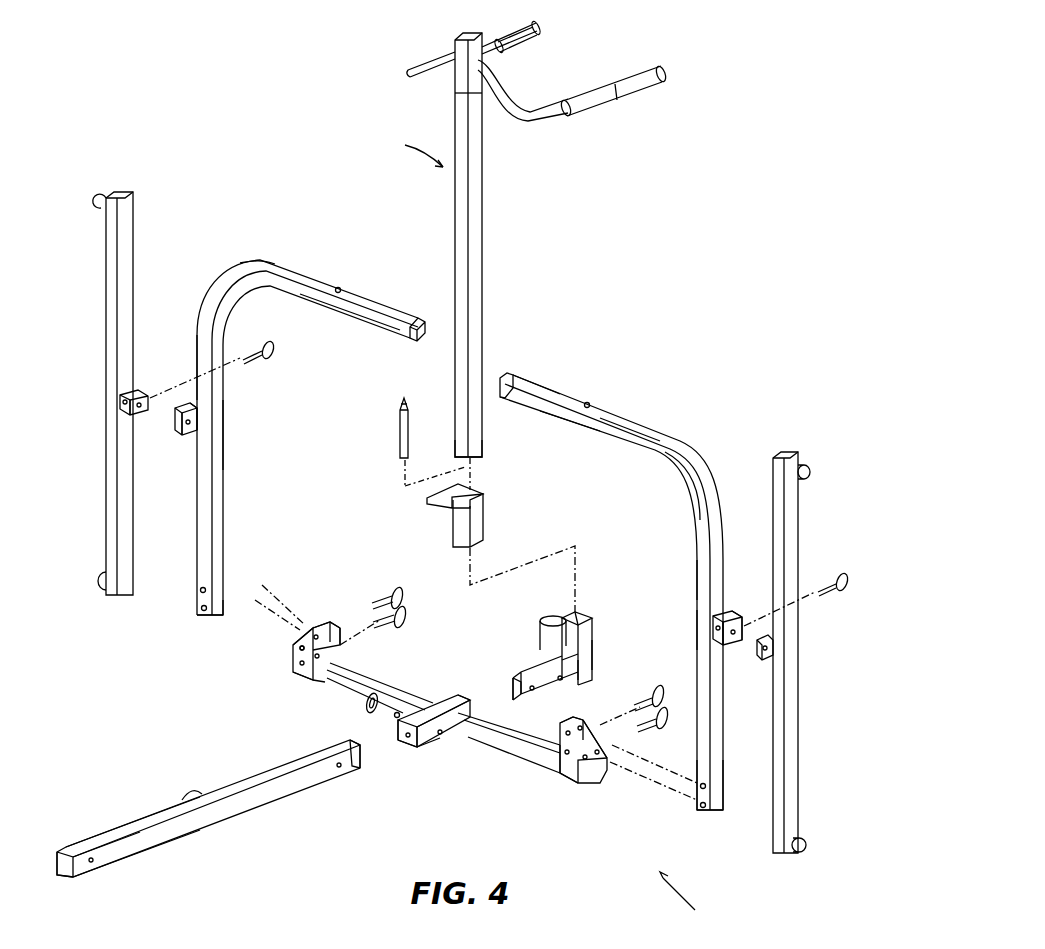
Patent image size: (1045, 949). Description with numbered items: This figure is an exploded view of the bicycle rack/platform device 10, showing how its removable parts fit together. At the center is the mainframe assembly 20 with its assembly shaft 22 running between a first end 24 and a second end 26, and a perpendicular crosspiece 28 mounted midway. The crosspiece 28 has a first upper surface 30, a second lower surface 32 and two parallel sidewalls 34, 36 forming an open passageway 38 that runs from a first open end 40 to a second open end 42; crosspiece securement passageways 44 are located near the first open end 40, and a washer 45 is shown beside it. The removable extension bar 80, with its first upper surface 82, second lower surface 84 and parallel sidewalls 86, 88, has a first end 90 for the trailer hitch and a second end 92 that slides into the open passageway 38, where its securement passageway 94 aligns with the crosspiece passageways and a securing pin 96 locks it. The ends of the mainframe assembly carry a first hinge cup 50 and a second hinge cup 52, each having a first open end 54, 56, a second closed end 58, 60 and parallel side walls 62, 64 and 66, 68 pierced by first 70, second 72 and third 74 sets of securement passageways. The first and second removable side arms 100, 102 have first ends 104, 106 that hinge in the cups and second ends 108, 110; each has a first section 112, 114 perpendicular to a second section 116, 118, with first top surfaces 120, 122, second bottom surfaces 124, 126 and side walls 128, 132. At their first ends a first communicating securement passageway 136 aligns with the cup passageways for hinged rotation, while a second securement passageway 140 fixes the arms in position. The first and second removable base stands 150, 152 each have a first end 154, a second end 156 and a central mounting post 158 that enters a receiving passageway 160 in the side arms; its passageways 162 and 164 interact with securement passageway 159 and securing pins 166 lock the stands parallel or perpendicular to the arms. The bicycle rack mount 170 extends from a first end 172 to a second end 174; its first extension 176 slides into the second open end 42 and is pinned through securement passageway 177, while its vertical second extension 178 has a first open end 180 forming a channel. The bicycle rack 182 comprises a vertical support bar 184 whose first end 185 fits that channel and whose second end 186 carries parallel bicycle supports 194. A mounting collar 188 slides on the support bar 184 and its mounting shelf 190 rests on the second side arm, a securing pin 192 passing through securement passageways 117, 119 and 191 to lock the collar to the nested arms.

The bicycle rack/platform device 10 is at (684, 900).
The mainframe assembly 20 is at (505, 748).
The assembly shaft 22 is at (395, 690).
The first end 24 is at (562, 766).
The second end 26 is at (325, 682).
The crosspiece 28 is at (427, 752).
The first upper surface 30 is at (450, 700).
The second lower surface 32 is at (432, 738).
The parallel sidewall 34 is at (394, 716).
The parallel sidewall 36 is at (440, 730).
The open passageway 38 is at (405, 745).
The first open end 40 is at (414, 750).
The second open end 42 is at (468, 700).
The crosspiece securement passageways 44 is at (439, 736).
The washer 45 is at (366, 706).
The first hinge cup 50 is at (597, 782).
The second hinge cup 52 is at (292, 665).
The first open end 54 is at (585, 720).
The first open end 56 is at (300, 632).
The second closed end 58 is at (572, 720).
The second closed end 60 is at (336, 624).
The parallel side wall 62 is at (600, 726).
The parallel side wall 64 is at (575, 786).
The parallel side wall 66 is at (300, 676).
The parallel side wall 68 is at (318, 625).
The first set of communicating securement passageways 70 is at (402, 597).
The second set of communicating securement passageways 72 is at (405, 618).
The third set of communicating securement passageways 74 is at (300, 642).
The removable extension bar 80 is at (235, 808).
The first upper surface 82 is at (130, 828).
The second lower surface 84 is at (115, 862).
The parallel sidewall 86 is at (175, 828).
The parallel sidewall 88 is at (158, 812).
The first end 90 is at (60, 878).
The second end 92 is at (360, 770).
The securement passageway 94 is at (337, 768).
The securing pin 96 is at (93, 862).
The first removable side arm 100 is at (692, 470).
The second removable side arm 102 is at (230, 262).
The first end 104 is at (718, 812).
The first end 106 is at (205, 613).
The second end 108 is at (503, 378).
The second end 110 is at (423, 322).
The first section 112 is at (698, 632).
The first section 114 is at (225, 435).
The second section 116 is at (568, 421).
The securement passageway 117 is at (587, 403).
The second section 118 is at (333, 318).
The securement passageway 119 is at (338, 288).
The first top surface 120 is at (682, 468).
The first top surface 122 is at (382, 340).
The second bottom surface 124 is at (661, 438).
The second bottom surface 126 is at (283, 262).
The parallel side wall 128 is at (697, 575).
The side wall 132 is at (199, 345).
The first communicating securement passageway 136 is at (200, 608).
The second securement passageway 140 is at (200, 590).
The first removable base stand 150 is at (800, 520).
The second removable base stand 152 is at (110, 268).
The first end 154 is at (113, 190).
The second end 156 is at (105, 592).
The mounting post 158 is at (143, 418).
The securement passageway 159 is at (125, 400).
The receiving passageway 160 is at (193, 440).
The first communicating securement passageway 162 is at (178, 420).
The second communicating securement passageway 164 is at (186, 405).
The securing pin 166 is at (275, 360).
The bicycle rack mount 170 is at (592, 630).
The first end 172 is at (515, 675).
The second end 174 is at (570, 615).
The first extension 176 is at (540, 620).
The communicating securement passageway 177 is at (548, 660).
The second extension 178 is at (593, 650).
The first open end 180 is at (585, 615).
The bicycle rack 182 is at (410, 144).
The vertical support bar 184 is at (482, 230).
The first end 185 is at (483, 458).
The second end 186 is at (492, 98).
The mounting collar 188 is at (455, 535).
The mounting shelf 190 is at (432, 494).
The securement passageway 191 is at (444, 490).
The securing pin 192 is at (400, 426).
The parallel bicycle supports 194 is at (538, 32).